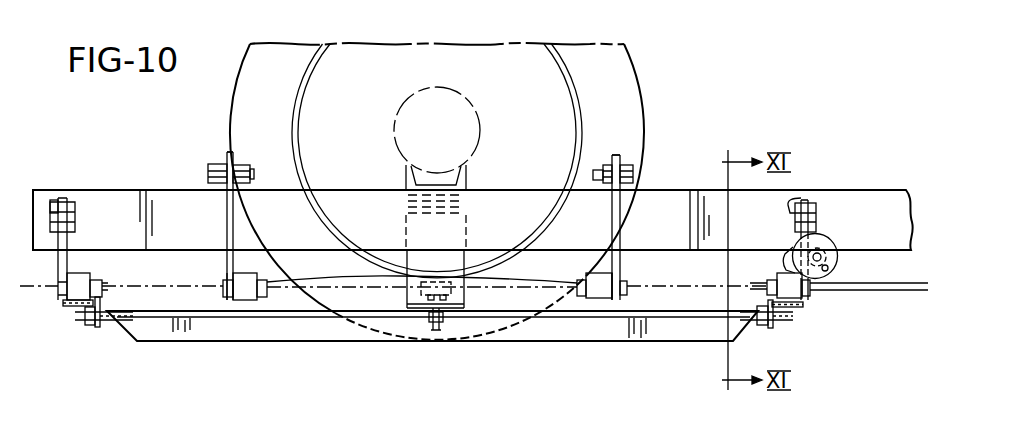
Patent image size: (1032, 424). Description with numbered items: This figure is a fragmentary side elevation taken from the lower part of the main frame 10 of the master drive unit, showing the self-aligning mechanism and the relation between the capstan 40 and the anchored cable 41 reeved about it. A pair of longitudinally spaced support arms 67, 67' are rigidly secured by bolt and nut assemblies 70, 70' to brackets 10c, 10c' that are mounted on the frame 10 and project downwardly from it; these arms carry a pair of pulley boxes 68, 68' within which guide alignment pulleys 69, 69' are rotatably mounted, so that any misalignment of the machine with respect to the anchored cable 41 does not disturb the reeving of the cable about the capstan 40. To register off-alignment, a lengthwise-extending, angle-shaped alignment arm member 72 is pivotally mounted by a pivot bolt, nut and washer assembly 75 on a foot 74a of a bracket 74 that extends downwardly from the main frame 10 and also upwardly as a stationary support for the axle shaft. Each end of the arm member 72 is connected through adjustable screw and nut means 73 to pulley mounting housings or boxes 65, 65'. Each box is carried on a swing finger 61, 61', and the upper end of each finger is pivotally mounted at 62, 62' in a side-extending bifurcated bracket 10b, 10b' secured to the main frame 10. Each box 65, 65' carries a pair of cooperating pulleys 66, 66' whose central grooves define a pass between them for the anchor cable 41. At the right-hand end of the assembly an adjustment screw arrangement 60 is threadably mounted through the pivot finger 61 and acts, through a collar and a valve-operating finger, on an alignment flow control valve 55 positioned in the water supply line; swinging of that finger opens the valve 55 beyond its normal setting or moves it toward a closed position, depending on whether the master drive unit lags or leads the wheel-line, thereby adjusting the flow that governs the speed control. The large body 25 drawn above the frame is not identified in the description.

The main frame 10 is at (860, 195).
The side-extending bifurcated bracket 10b is at (815, 187).
The side-extending bifurcated bracket 10b' is at (58, 171).
The bracket 10c is at (656, 141).
The bracket 10c' is at (199, 144).
The tank 25 is at (642, 97).
The capstan 40 is at (590, 68).
The anchored cable 41 is at (882, 292).
The alignment flow control valve 55 is at (783, 262).
The cam disc 60 is at (838, 258).
The swing finger 61 is at (834, 196).
The swing finger 61' is at (85, 191).
The pivot mounting 62 is at (831, 216).
The pivot mounting 62' is at (88, 216).
The pulley mounting box 65 is at (791, 320).
The pulley mounting box 65' is at (83, 320).
The cooperating pulley 66 is at (825, 266).
The cooperating pulley 66' is at (45, 283).
The support arm 67 is at (642, 227).
The support arm 67' is at (204, 226).
The pulley box 68 is at (602, 320).
The pulley box 68' is at (247, 320).
The guide alignment pulley 69 is at (631, 320).
The guide alignment pulley 69' is at (210, 320).
The bolt and nut assembly 70 is at (641, 168).
The bolt and nut assembly 70' is at (208, 175).
The angle-shaped alignment arm member 72 is at (309, 332).
The adjustable screw and nut means 73 is at (105, 322).
The bracket 74 is at (466, 240).
The foot 74a is at (401, 291).
The pivot bolt, nut and washer assembly 75 is at (437, 332).